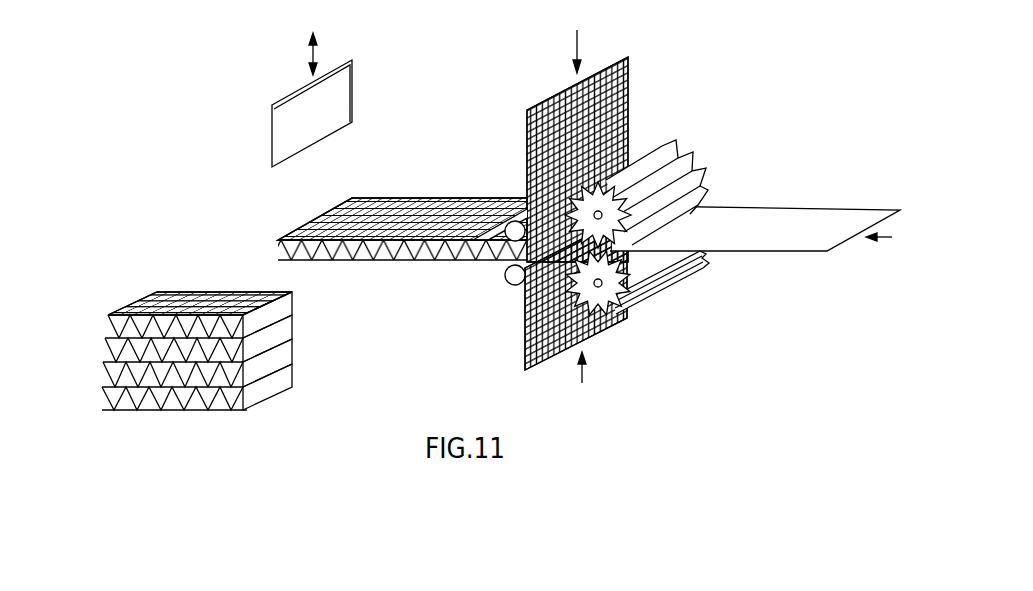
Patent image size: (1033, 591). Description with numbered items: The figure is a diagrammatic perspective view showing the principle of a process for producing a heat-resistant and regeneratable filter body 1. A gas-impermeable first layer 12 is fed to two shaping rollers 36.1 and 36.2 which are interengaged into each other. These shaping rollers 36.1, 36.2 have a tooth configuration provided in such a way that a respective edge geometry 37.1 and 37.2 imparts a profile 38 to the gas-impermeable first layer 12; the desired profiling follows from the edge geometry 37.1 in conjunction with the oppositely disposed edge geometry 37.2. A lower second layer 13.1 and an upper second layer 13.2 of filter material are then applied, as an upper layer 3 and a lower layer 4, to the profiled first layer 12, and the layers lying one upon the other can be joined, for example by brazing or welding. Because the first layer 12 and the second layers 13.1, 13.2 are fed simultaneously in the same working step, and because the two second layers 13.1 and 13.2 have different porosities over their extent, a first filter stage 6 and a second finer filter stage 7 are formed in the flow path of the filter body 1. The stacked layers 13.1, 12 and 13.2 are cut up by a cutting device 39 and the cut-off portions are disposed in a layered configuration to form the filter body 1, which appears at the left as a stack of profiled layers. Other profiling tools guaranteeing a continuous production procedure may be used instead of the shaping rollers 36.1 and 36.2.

The filter body 1 is at (167, 315).
The upper layer 3 is at (403, 197).
The lower layer 4 is at (424, 262).
The first filter stage 6 is at (137, 279).
The second finer filter stage 7 is at (214, 279).
The gas-impermeable first layer 12 is at (826, 247).
The lower second layer of filter material 13.1 is at (522, 337).
The upper second layer of filter material 13.2 is at (612, 55).
The shaping roller 36.1 is at (612, 330).
The shaping roller 36.2 is at (688, 154).
The edge geometry 37.1 is at (667, 273).
The edge geometry 37.2 is at (652, 166).
The profile 38 is at (377, 267).
The cutting device 39 is at (352, 84).